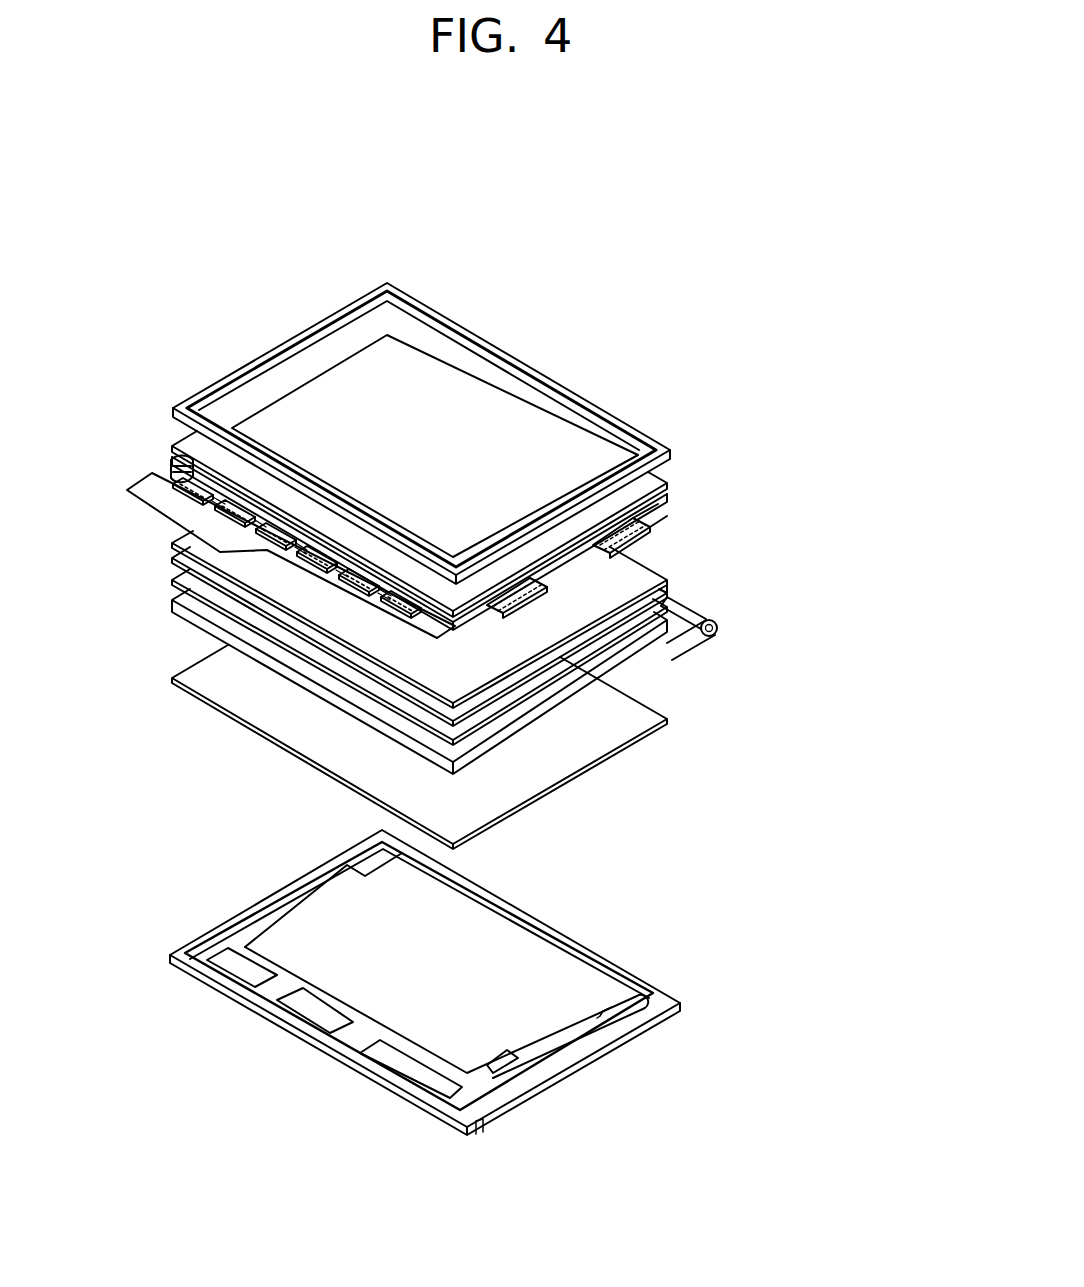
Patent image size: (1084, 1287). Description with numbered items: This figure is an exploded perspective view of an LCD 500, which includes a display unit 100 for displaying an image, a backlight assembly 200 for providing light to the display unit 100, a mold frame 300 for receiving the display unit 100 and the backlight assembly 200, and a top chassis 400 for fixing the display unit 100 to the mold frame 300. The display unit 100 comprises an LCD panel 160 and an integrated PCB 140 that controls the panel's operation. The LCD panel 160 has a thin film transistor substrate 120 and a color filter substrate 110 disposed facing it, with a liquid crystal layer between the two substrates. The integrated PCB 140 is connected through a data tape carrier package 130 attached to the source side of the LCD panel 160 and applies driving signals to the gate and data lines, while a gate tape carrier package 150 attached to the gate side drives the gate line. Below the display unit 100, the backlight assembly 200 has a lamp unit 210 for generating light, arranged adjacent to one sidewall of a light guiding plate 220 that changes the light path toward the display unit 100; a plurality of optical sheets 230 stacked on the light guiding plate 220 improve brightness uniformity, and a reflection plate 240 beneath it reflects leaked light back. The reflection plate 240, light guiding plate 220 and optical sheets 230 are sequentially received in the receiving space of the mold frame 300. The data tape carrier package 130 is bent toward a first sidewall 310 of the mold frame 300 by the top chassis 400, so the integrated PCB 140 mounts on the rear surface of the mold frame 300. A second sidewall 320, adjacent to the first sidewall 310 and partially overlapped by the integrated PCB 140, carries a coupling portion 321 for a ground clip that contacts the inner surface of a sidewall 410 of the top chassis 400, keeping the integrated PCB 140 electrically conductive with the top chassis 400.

The display unit 100 is at (849, 490).
The color filter substrate 110 is at (648, 480).
The thin film transistor substrate 120 is at (655, 507).
The data tape carrier package 130 is at (183, 462).
The integrated PCB 140 is at (160, 498).
The gate tape carrier package 150 is at (643, 530).
The LCD panel 160 is at (510, 530).
The backlight assembly 200 is at (879, 578).
The lamp unit 210 is at (706, 609).
The light guiding plate 220 is at (570, 713).
The optical sheets 230 is at (167, 533).
The reflection plate 240 is at (537, 777).
The mold frame 300 is at (722, 962).
The first sidewall 310 is at (427, 1111).
The second sidewall 320 is at (641, 1036).
The coupling portion 321 is at (481, 1135).
The top chassis 400 is at (422, 433).
The sidewall of the top chassis 410 is at (550, 518).
The LCD 500 is at (641, 288).